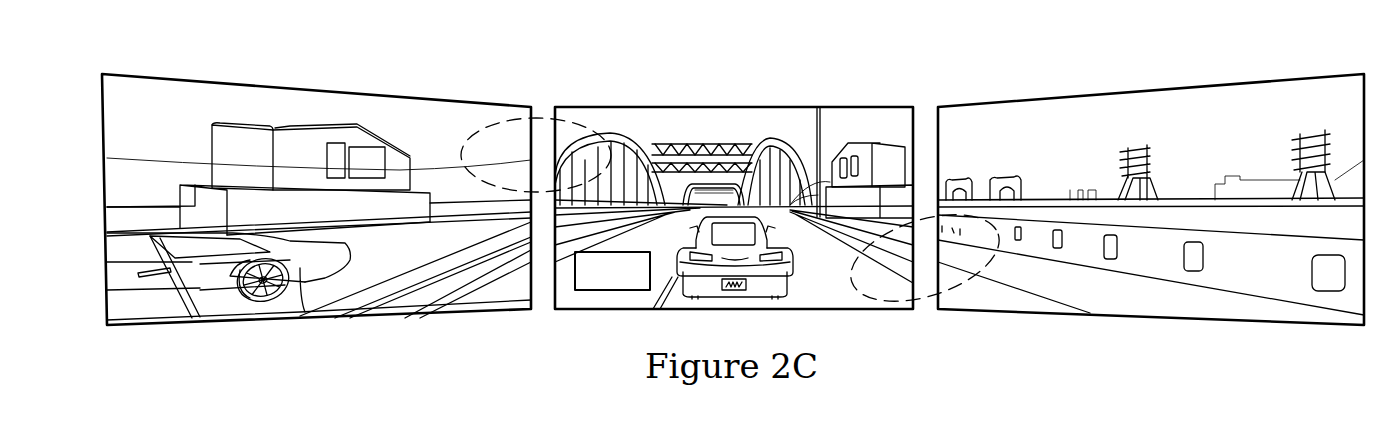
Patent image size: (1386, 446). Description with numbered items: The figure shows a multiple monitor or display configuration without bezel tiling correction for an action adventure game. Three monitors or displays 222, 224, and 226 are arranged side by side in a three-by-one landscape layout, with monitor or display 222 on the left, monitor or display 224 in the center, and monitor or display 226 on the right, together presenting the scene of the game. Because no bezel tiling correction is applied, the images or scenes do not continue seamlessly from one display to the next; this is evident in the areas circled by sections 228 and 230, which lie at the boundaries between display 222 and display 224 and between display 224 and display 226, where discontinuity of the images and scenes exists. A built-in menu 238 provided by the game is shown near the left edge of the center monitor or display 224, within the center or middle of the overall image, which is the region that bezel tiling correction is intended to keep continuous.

The monitor or display 222 is at (318, 90).
The monitor or display 224 is at (735, 104).
The monitor or display 226 is at (1152, 90).
The section 228 is at (500, 118).
The section 230 is at (948, 298).
The menu 238 is at (612, 292).